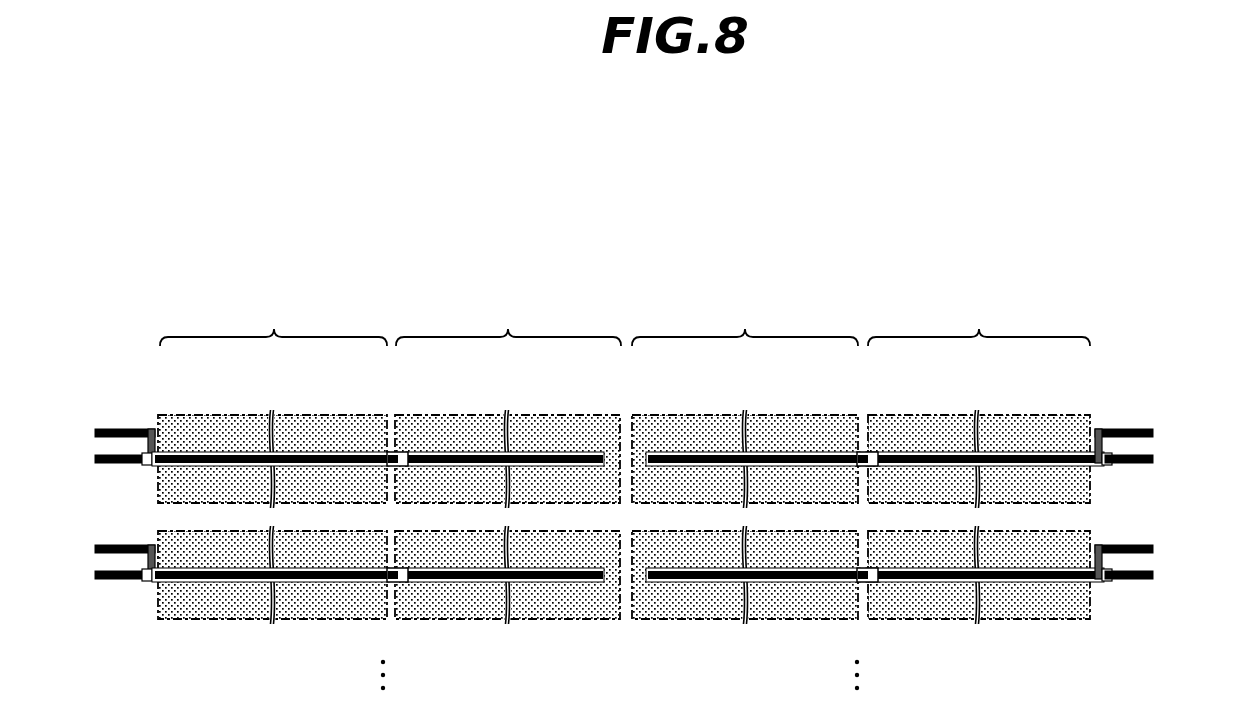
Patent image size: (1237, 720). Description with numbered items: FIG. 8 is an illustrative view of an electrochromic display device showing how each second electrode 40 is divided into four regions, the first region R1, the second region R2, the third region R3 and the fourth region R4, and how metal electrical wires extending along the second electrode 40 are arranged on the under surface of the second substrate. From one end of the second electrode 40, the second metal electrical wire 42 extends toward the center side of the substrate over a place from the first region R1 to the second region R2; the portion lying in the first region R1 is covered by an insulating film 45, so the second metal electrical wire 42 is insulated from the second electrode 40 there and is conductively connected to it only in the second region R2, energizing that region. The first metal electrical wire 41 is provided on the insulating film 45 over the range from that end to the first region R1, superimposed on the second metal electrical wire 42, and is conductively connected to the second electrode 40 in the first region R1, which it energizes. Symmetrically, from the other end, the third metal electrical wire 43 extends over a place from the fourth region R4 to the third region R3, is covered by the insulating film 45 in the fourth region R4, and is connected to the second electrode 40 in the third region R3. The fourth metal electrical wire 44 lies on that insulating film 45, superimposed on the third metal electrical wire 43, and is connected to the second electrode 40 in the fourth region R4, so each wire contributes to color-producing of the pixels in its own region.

The second electrode 40 is at (312, 415).
The first metal electrical wire 41 is at (95, 430).
The second metal electrical wire 42 is at (95, 457).
The third metal electrical wire 43 is at (1155, 456).
The fourth metal electrical wire 44 is at (1155, 430).
The insulating film 45 is at (392, 452).
The first region R1 is at (273, 320).
The second region R2 is at (508, 320).
The third region R3 is at (745, 320).
The fourth region R4 is at (979, 320).